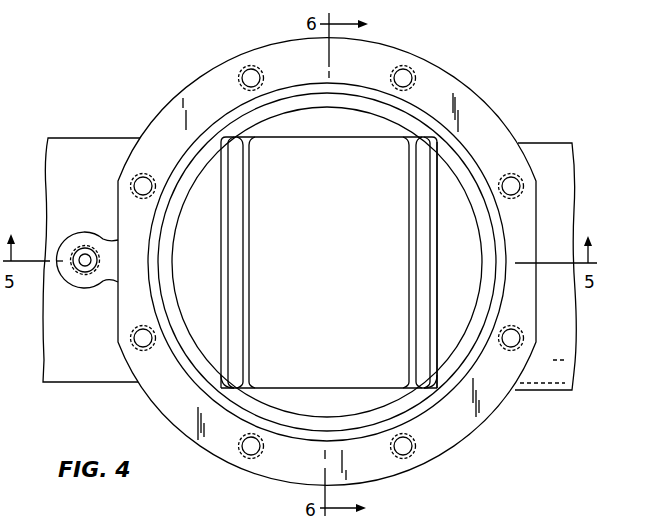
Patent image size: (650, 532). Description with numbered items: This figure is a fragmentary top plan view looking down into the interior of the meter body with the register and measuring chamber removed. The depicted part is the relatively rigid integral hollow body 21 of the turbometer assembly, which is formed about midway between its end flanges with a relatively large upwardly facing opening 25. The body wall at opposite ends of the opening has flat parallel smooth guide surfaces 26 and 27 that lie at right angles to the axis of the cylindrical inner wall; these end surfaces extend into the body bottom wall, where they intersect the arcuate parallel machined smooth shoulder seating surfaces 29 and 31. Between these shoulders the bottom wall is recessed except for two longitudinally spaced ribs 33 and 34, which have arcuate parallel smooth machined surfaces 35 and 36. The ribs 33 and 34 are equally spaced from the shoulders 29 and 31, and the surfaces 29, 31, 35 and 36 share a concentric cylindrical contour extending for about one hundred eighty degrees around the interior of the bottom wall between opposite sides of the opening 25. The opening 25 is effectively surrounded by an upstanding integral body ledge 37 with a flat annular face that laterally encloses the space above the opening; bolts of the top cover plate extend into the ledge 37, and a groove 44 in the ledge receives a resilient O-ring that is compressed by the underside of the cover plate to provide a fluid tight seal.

The hollow body 21 is at (118, 150).
The upwardly facing opening 25 is at (446, 193).
The guide surface 26 is at (221, 375).
The guide surface 27 is at (432, 378).
The shoulder seating surface 29 is at (223, 196).
The shoulder seating surface 31 is at (431, 238).
The rib 33 is at (250, 219).
The rib 34 is at (410, 272).
The rib surface 35 is at (245, 249).
The rib surface 36 is at (412, 228).
The body ledge 37 is at (442, 80).
The groove 44 is at (432, 123).